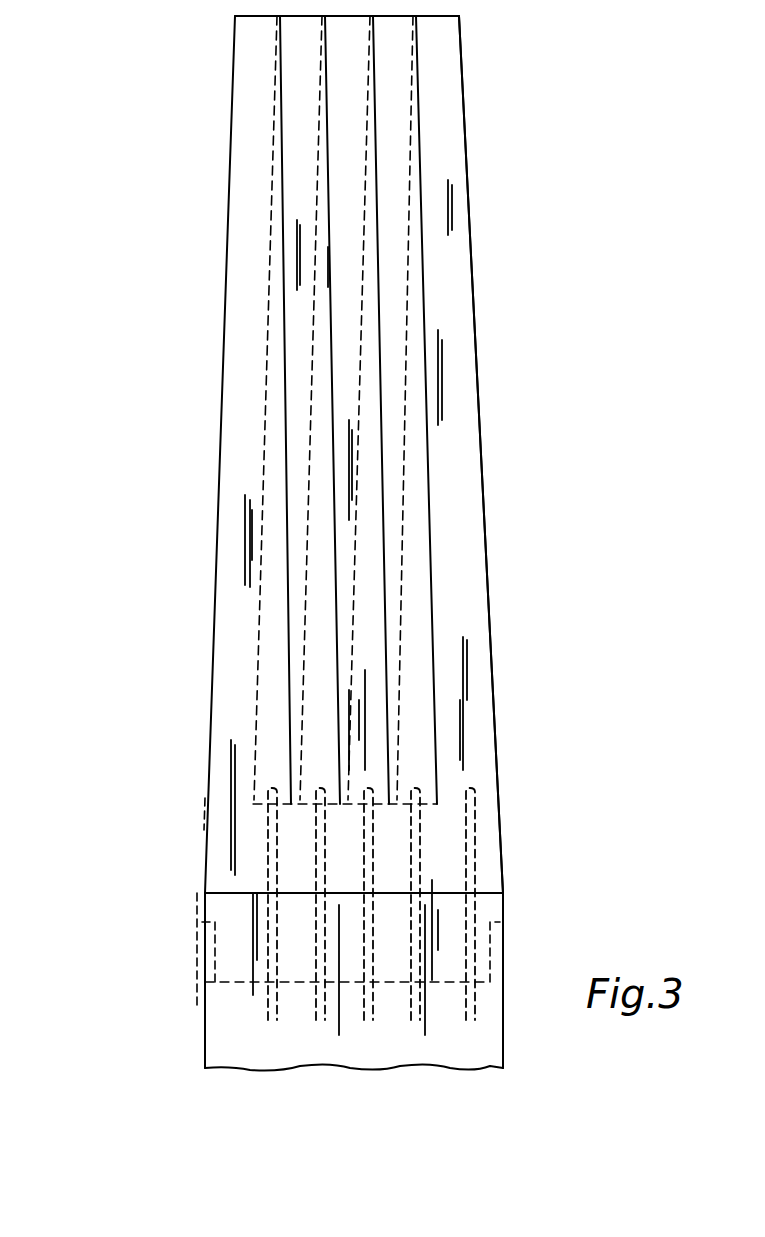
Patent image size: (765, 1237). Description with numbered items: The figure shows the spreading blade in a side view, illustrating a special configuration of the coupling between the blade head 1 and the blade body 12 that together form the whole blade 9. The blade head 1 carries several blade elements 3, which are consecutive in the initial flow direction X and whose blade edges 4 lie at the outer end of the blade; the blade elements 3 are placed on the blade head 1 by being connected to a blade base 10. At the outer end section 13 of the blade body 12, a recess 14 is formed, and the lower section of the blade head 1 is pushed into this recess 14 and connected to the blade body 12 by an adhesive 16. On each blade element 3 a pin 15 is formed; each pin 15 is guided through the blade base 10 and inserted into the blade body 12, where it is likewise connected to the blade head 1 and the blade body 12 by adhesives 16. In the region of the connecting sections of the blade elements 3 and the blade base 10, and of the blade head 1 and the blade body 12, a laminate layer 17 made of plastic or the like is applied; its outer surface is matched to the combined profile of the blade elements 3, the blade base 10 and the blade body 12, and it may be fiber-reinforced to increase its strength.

The blade head 1 is at (587, 137).
The blade elements 3 is at (462, 358).
The blade edges 4 is at (469, 16).
The whole blade 9 is at (155, 977).
The blade base 10 is at (515, 776).
The blade body 12 is at (493, 1037).
The outer end section 13 is at (508, 892).
The recess 14 is at (484, 940).
The pin 15 is at (470, 838).
The adhesive 16 is at (473, 862).
The laminate layer 17 is at (205, 798).
The initial flow direction X is at (546, 243).